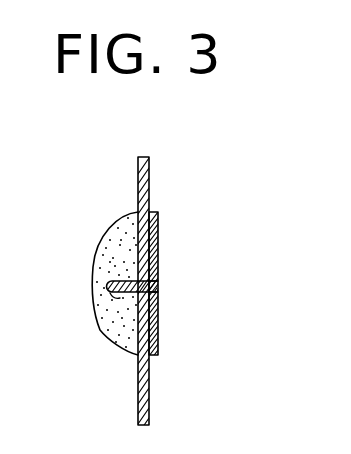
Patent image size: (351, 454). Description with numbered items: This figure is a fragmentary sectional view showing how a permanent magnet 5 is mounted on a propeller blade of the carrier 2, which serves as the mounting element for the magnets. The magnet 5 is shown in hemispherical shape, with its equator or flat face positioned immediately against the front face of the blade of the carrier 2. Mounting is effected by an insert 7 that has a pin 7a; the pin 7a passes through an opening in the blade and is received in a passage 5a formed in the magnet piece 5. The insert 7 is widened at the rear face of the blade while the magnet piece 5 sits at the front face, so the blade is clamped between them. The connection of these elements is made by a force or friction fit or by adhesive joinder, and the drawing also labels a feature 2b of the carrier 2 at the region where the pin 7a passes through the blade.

The carrier 2 is at (138, 183).
The hook tab 2b is at (137, 310).
The permanent magnet 5 is at (97, 257).
The passage 5a is at (110, 298).
The insert 7 is at (160, 243).
The pin 7a is at (160, 286).